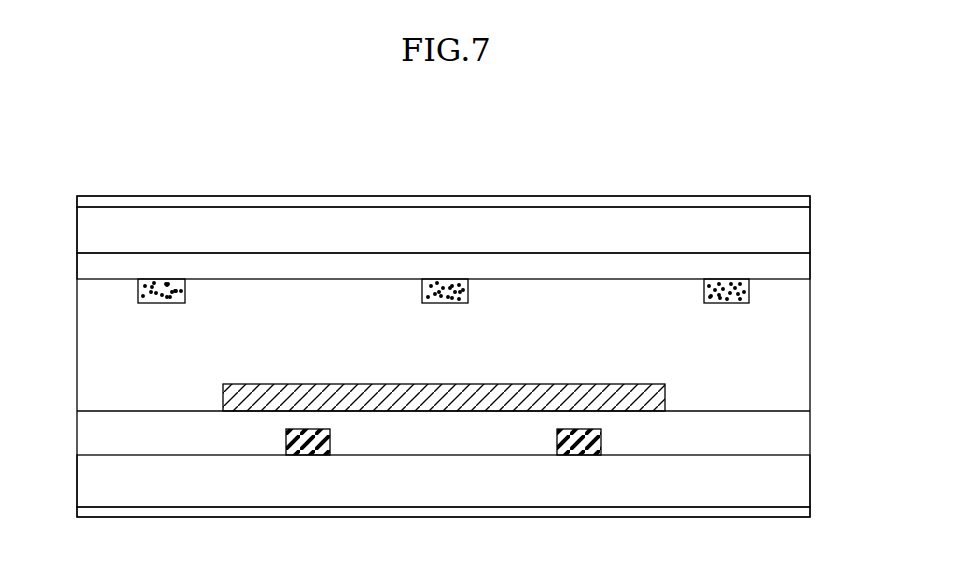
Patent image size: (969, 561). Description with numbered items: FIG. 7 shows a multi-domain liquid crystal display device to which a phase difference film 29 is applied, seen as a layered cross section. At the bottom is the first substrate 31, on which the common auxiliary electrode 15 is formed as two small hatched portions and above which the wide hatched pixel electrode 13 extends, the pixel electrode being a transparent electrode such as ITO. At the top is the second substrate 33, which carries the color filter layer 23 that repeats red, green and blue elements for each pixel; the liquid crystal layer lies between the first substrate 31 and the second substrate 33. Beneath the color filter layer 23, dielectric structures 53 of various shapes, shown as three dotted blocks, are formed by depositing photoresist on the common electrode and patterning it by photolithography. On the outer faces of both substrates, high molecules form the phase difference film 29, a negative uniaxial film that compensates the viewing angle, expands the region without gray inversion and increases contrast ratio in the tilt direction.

The phase difference film 29 is at (803, 203).
The second substrate 33 is at (803, 233).
The color filter layer 23 is at (803, 268).
The dielectric structures 53 is at (749, 293).
The pixel electrode 13 is at (558, 400).
The common auxiliary electrode 15 is at (601, 440).
The first substrate 31 is at (803, 485).